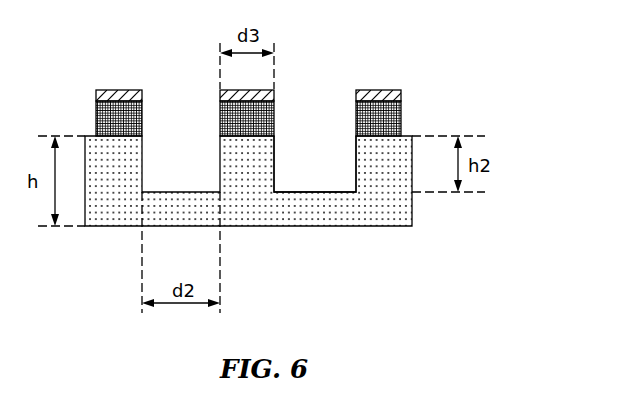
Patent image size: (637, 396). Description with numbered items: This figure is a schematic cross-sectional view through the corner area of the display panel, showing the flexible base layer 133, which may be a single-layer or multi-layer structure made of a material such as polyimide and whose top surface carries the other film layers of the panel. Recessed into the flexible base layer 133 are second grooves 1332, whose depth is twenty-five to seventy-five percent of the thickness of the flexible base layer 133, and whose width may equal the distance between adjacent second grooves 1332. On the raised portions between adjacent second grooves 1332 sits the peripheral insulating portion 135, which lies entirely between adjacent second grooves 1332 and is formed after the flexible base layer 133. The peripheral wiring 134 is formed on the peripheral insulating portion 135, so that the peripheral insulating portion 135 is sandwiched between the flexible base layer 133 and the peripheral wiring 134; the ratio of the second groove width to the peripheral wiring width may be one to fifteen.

The flexible base layer 133 is at (328, 226).
The peripheral wiring 134 is at (120, 89).
The peripheral insulating portion 135 is at (385, 115).
The second groove 1332 is at (302, 163).